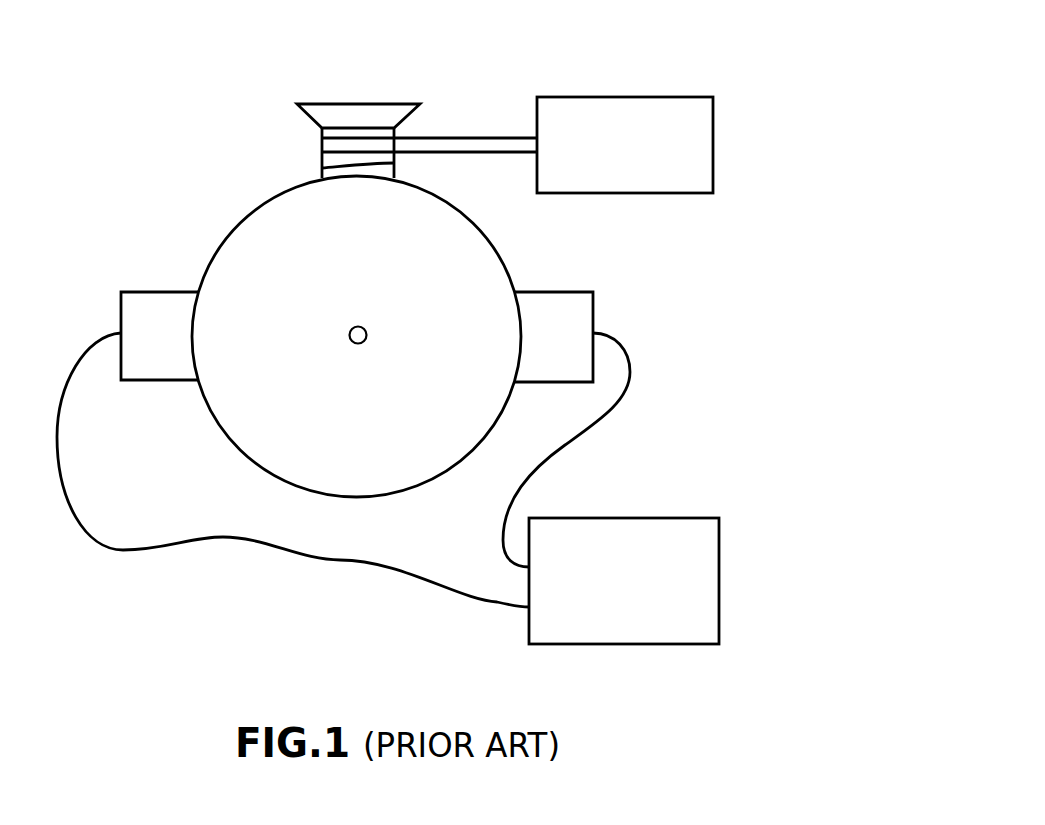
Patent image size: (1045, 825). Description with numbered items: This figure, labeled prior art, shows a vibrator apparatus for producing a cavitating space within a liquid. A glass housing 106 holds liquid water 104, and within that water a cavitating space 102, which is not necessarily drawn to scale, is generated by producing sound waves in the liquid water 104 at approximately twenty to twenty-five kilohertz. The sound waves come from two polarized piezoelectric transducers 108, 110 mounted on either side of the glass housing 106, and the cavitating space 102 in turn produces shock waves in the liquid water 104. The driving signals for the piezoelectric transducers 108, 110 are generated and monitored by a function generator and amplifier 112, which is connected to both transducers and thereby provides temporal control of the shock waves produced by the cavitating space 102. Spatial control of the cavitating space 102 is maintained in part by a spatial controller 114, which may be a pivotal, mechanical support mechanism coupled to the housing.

The cavitating space 102 is at (367, 328).
The liquid water 104 is at (375, 238).
The glass housing 106 is at (252, 212).
The polarized piezoelectric transducer 108 is at (143, 297).
The polarized piezoelectric transducer 110 is at (563, 300).
The function generator and amplifier 112 is at (673, 517).
The spatial controller 114 is at (675, 96).